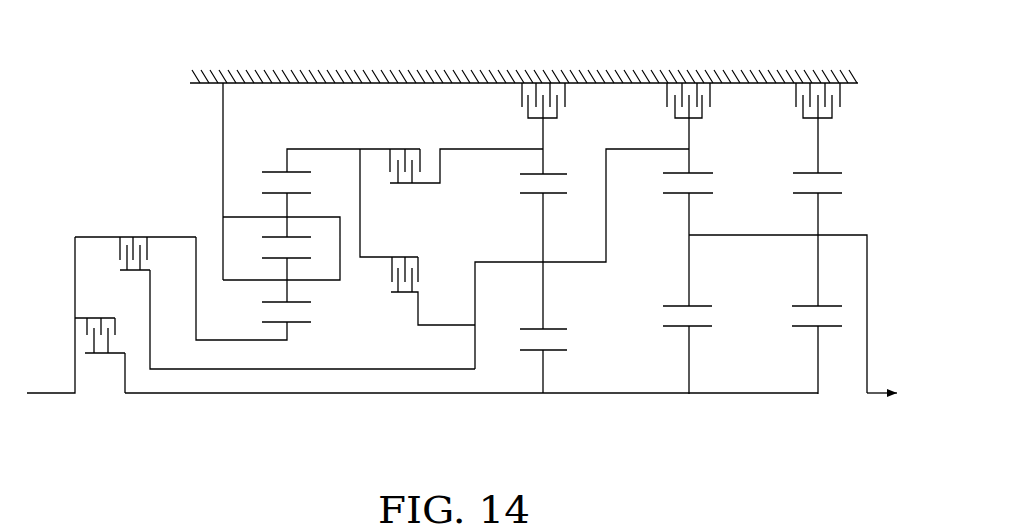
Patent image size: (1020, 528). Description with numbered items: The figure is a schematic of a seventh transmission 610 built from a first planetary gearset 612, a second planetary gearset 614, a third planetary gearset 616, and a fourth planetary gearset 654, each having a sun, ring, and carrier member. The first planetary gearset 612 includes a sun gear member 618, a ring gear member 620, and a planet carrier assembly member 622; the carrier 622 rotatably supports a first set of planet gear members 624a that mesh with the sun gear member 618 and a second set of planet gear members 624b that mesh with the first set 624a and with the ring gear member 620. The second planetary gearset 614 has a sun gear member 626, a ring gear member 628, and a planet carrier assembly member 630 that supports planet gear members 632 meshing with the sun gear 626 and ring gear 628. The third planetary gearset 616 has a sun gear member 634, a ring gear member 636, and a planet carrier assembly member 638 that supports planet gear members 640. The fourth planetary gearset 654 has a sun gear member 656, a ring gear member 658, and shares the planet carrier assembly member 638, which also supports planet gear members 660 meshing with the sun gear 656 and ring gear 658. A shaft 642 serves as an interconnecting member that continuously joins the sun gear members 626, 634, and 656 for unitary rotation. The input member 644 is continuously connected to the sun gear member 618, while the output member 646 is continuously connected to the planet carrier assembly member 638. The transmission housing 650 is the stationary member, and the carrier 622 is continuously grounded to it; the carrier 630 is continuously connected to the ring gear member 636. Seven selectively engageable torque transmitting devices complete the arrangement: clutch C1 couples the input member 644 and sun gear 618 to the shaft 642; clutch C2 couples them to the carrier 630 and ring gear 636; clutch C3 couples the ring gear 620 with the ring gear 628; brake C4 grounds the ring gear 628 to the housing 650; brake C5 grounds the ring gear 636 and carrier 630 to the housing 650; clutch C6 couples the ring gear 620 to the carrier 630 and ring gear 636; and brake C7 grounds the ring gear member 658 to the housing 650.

The transmission 610 is at (110, 116).
The first planetary gearset 612 is at (250, 327).
The second planetary gearset 614 is at (576, 364).
The third planetary gearset 616 is at (721, 341).
The sun gear member 618 is at (303, 325).
The ring gear member 620 is at (277, 172).
The planet carrier assembly member 622 is at (223, 127).
The first set of planet gear members 624a is at (272, 263).
The second set of planet gear members 624b is at (272, 198).
The sun gear member 626 is at (528, 352).
The ring gear member 628 is at (526, 176).
The planet carrier assembly member 630 is at (495, 262).
The planet gear members 632 is at (558, 195).
The sun gear member 634 is at (680, 325).
The ring gear member 636 is at (707, 172).
The planet carrier assembly member 638 is at (737, 237).
The planet gear members 640 is at (679, 195).
The shaft 642 is at (392, 393).
The input member 644 is at (43, 395).
The output member 646 is at (887, 397).
The transmission housing 650 is at (715, 72).
The fourth planetary gearset 654 is at (838, 342).
The sun gear member 656 is at (805, 325).
The ring gear member 658 is at (835, 172).
The planet gear members 660 is at (804, 195).
The clutch C1 is at (79, 332).
The clutch C2 is at (107, 246).
The clutch C3 is at (382, 165).
The brake C4 is at (506, 95).
The brake C5 is at (652, 95).
The clutch C6 is at (382, 279).
The brake C7 is at (787, 96).